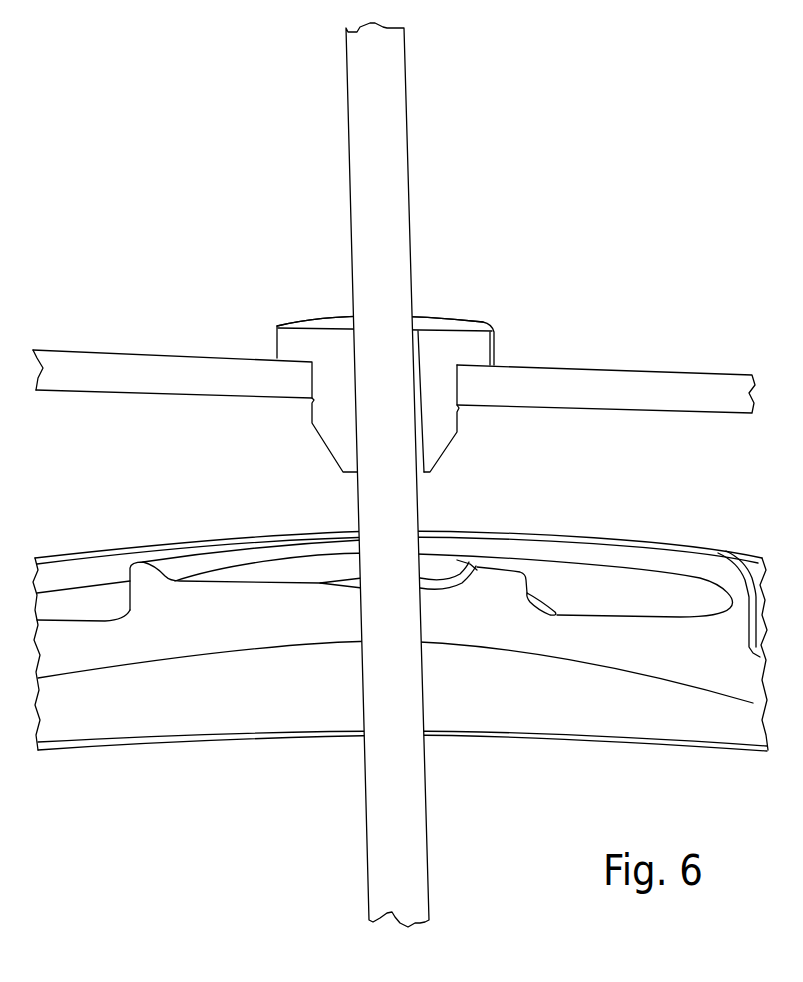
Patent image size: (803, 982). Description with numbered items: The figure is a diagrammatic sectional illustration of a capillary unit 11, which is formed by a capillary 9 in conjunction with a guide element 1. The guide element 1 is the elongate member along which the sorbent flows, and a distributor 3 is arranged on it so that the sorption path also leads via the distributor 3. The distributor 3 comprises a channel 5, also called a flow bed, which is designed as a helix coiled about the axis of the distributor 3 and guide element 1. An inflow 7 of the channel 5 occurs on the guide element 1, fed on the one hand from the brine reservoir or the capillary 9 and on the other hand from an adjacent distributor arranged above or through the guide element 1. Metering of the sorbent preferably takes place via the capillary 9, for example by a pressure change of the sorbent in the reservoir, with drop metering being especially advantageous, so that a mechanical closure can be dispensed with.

The guide element 1 is at (385, 185).
The distributor 3 is at (665, 550).
The channel 5 is at (577, 585).
The inflow 7 is at (432, 520).
The capillary 9 is at (425, 318).
The capillary unit 11 is at (473, 349).